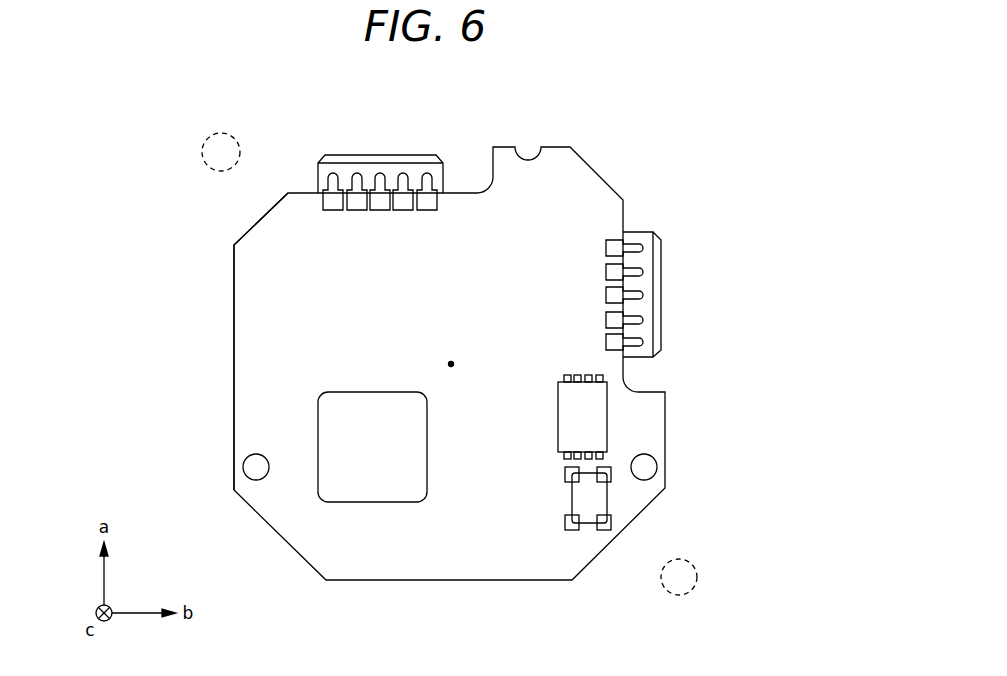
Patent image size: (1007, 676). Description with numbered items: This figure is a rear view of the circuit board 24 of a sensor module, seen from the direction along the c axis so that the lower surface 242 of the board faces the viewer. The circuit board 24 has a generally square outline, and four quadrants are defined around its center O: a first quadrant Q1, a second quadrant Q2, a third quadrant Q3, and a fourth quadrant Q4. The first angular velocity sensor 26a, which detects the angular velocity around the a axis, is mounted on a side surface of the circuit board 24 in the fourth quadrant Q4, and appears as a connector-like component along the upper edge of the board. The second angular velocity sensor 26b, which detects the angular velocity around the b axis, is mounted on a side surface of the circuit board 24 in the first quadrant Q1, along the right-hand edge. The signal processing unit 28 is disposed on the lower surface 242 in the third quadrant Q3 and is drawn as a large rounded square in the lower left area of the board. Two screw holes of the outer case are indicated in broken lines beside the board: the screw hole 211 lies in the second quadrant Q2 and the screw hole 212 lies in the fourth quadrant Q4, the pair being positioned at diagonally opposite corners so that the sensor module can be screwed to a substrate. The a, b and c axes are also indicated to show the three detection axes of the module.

The circuit board 24 is at (614, 186).
The lower surface 242 is at (266, 298).
The first angular velocity sensor 26a is at (368, 165).
The second angular velocity sensor 26b is at (642, 283).
The signal processing unit 28 is at (372, 470).
The center O is at (459, 375).
The screw hole 212 is at (222, 140).
The screw hole 211 is at (681, 565).
The first quadrant Q1 is at (618, 140).
The second quadrant Q2 is at (618, 616).
The third quadrant Q3 is at (250, 616).
The fourth quadrant Q4 is at (250, 140).